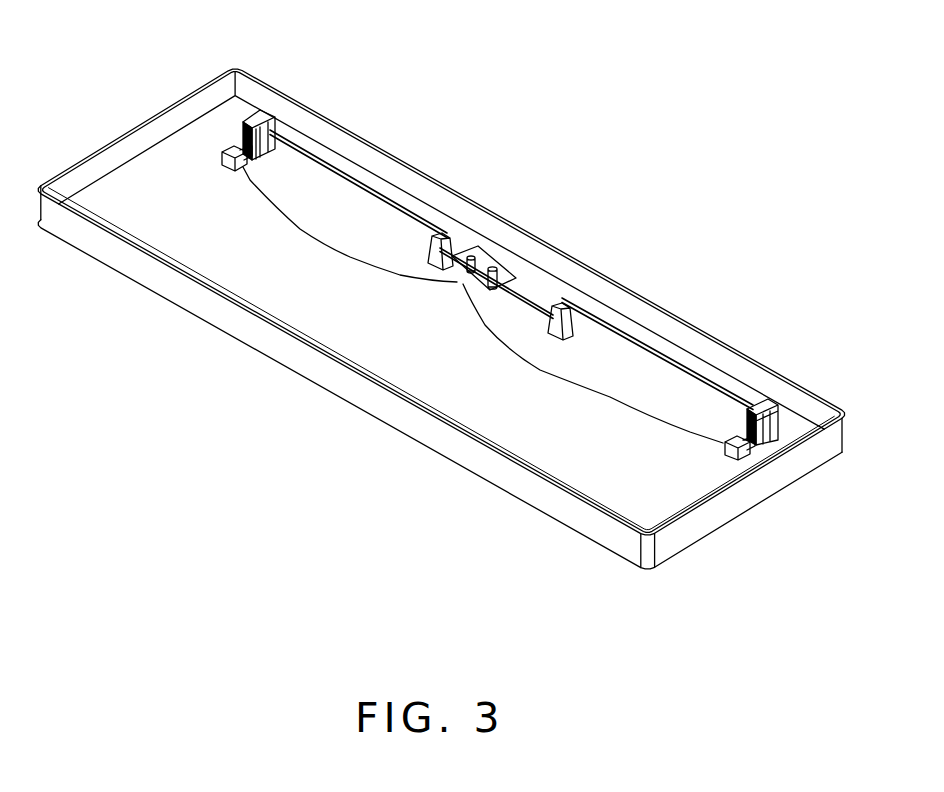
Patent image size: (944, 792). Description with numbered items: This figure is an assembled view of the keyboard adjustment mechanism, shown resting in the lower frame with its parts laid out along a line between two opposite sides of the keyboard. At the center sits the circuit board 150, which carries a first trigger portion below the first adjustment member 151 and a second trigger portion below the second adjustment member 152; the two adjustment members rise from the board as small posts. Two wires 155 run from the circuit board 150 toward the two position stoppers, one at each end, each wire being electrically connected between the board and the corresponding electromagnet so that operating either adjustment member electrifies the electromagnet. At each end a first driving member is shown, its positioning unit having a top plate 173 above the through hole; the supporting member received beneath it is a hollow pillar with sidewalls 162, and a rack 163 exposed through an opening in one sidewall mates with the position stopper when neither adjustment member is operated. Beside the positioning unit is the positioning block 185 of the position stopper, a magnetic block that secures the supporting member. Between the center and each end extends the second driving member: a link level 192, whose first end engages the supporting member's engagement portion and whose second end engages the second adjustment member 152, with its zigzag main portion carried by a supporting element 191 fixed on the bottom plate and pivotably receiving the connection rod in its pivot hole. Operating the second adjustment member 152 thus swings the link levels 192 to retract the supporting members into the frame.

The circuit board 150 is at (537, 232).
The first adjustment member 151 is at (471, 255).
The second adjustment member 152 is at (500, 276).
The wire 155 is at (598, 395).
The sidewall 162 is at (285, 128).
The rack 163 is at (240, 127).
The top plate 173 is at (262, 115).
The positioning block 185 is at (240, 148).
The supporting element 191 is at (573, 320).
The link level 192 is at (653, 348).